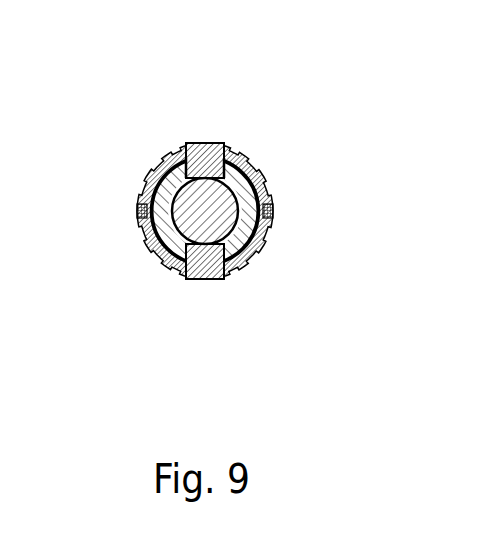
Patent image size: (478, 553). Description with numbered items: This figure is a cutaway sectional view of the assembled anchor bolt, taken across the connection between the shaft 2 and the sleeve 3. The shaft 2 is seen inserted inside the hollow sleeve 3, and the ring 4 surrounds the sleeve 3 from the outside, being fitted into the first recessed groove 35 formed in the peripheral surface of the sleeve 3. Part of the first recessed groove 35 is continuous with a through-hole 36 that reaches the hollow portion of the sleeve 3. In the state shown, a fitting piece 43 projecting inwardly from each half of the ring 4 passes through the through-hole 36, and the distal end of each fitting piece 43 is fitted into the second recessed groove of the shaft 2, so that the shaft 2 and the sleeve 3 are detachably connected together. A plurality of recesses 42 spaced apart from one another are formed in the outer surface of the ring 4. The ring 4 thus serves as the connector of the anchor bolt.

The shaft 2 is at (205, 228).
The sleeve 3 is at (270, 190).
The ring 4 is at (240, 198).
The first recessed groove 35 is at (157, 153).
The through-hole 36 is at (195, 145).
The recesses 42 is at (233, 147).
The fitting piece 43 is at (217, 143).